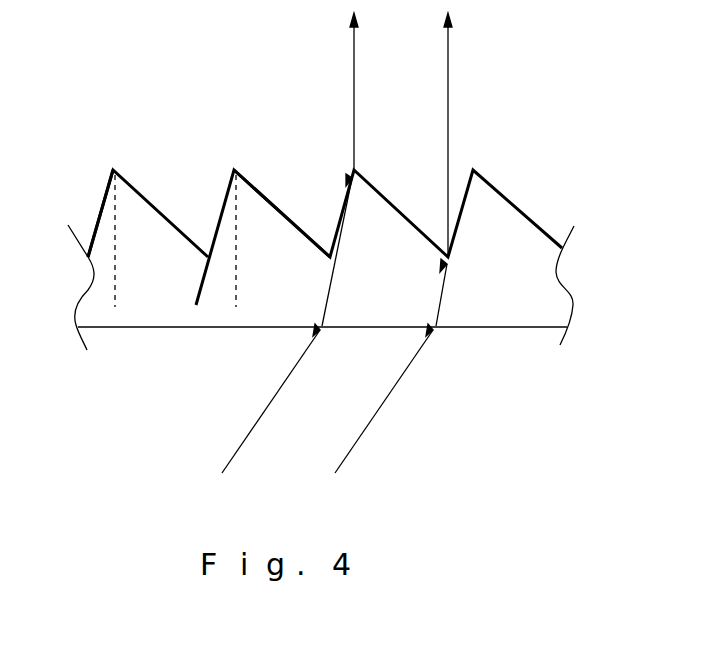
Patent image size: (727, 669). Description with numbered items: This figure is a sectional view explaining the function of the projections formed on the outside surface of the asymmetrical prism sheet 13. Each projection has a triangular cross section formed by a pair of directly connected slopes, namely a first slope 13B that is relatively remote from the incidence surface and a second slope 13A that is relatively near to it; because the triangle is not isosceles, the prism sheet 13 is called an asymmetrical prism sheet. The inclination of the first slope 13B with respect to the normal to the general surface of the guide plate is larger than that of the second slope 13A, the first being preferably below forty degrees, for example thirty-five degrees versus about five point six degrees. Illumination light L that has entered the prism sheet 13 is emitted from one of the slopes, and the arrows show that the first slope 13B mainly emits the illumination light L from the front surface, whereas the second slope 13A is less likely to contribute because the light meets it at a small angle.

The prism sheet 13 is at (545, 287).
The second slope 13A is at (220, 208).
The first slope 13B is at (273, 203).
The illumination light L is at (448, 100).